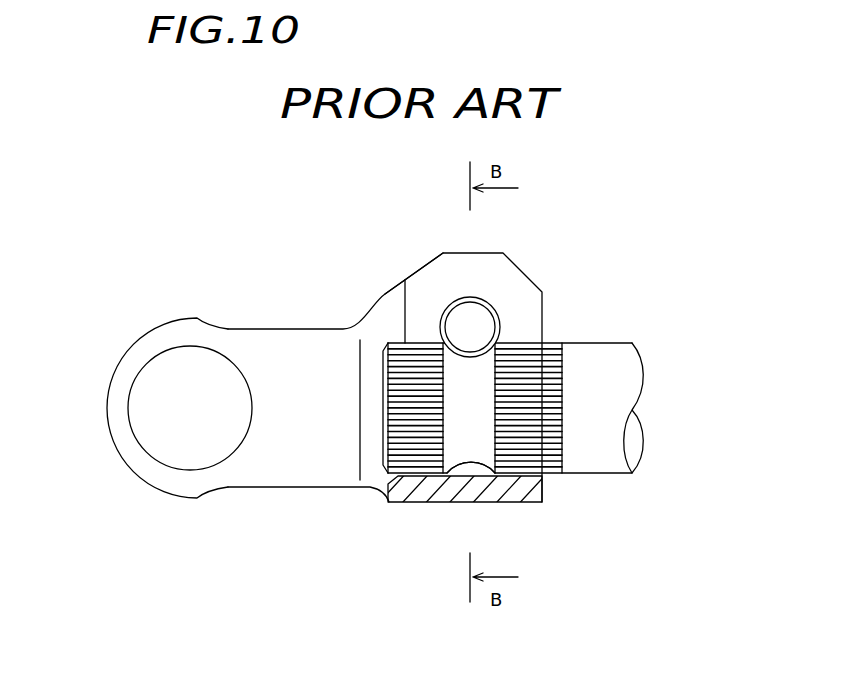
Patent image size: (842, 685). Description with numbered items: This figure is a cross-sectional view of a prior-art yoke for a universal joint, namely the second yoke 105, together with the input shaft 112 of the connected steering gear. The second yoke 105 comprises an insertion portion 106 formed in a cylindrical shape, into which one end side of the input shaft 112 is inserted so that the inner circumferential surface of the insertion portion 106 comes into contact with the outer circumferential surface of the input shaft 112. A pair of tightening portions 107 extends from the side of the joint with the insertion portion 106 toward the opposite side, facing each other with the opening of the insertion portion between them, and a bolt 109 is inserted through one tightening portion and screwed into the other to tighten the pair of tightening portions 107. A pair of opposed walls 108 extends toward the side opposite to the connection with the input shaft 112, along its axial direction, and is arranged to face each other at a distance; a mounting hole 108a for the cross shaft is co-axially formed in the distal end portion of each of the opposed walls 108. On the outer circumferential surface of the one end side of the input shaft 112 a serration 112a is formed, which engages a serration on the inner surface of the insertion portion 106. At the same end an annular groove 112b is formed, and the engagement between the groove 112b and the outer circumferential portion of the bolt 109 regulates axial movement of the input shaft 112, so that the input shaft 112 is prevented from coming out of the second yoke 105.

The second yoke 105 is at (200, 224).
The insertion portion 106 is at (413, 498).
The tightening portions 107 is at (433, 268).
The opposed walls 108 is at (253, 377).
The mounting hole 108a is at (127, 400).
The bolt 109 is at (493, 310).
The input shaft 112 is at (530, 408).
The serration 112a is at (550, 345).
The annular groove 112b is at (472, 448).